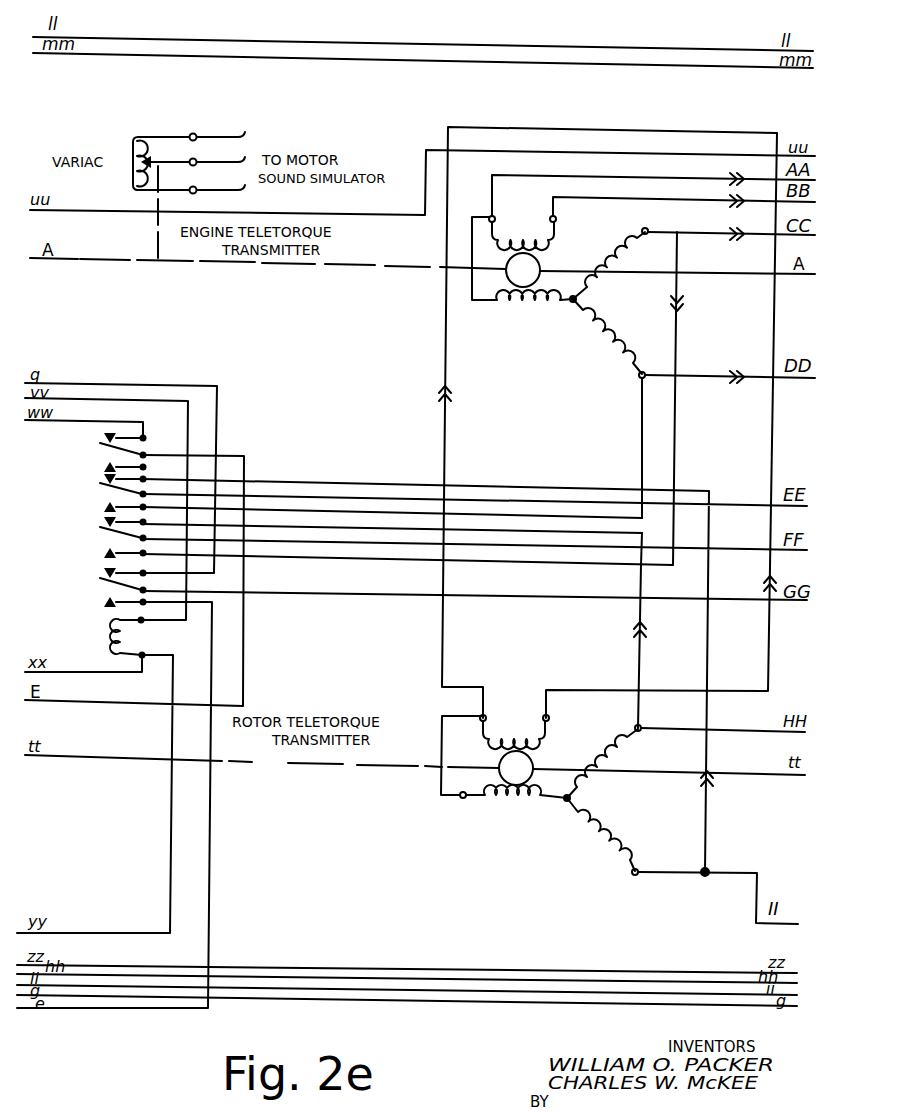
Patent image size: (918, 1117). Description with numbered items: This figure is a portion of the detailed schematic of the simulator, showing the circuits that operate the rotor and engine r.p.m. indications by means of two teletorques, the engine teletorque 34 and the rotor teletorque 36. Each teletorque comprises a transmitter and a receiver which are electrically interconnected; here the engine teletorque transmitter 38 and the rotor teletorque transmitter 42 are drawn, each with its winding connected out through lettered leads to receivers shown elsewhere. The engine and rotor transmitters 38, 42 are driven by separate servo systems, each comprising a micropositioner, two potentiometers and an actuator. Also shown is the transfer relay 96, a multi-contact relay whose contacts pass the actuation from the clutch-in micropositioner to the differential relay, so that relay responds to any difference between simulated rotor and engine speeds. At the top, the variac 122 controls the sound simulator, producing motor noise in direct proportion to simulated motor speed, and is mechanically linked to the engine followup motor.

The variac 122 is at (203, 147).
The engine teletorque 34 is at (533, 210).
The engine tachometer teletorque transmitter 38 is at (545, 285).
The rotor tachometer teletorque transmitter 42 is at (538, 755).
The rotor teletorque 36 is at (557, 785).
The transfer relay 96 is at (135, 645).